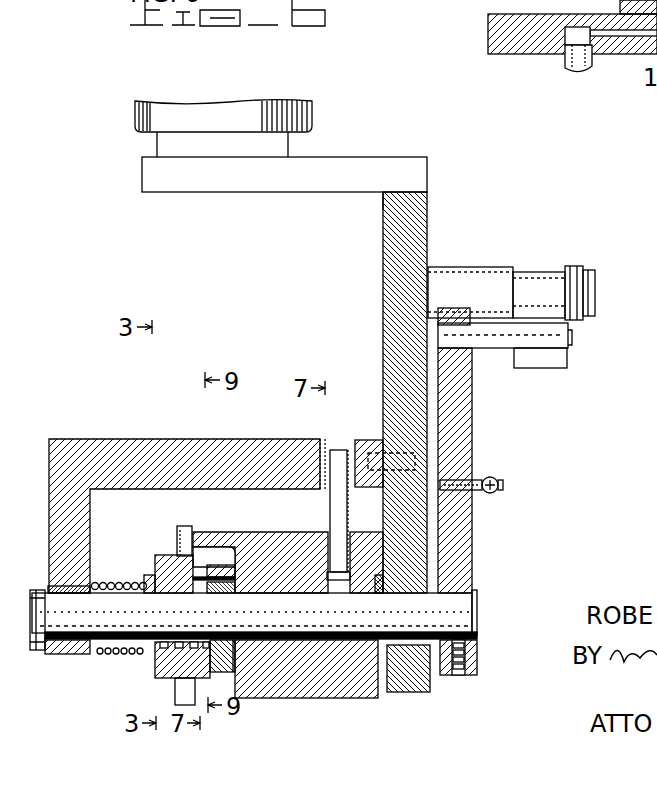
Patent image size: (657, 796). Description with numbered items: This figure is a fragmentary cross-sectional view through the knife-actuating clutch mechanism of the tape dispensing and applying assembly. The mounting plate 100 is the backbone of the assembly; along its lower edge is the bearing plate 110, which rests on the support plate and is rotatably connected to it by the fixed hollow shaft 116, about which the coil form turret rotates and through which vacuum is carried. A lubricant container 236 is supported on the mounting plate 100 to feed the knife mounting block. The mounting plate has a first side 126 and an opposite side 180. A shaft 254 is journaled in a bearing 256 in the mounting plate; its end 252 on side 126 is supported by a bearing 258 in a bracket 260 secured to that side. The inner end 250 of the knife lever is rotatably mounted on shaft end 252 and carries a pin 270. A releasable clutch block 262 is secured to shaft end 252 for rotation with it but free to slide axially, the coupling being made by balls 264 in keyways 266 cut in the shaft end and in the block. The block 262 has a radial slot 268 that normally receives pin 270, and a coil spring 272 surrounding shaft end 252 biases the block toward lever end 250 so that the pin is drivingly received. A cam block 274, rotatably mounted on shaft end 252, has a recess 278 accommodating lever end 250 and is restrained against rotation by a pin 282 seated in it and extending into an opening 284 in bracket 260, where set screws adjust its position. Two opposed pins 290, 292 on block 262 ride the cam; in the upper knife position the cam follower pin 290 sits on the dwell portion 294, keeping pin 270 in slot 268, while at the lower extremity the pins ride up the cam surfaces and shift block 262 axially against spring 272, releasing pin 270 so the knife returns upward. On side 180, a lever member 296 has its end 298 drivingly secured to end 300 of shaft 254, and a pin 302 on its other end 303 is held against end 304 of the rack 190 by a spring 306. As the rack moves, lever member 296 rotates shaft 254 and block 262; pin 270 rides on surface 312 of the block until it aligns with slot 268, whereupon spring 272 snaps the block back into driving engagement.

The mounting plate 100 is at (430, 198).
The bearing plate 110 is at (488, 32).
The fixed hollow shaft 116 is at (565, 58).
The side of mounting plate 126 is at (380, 212).
The opposite side of mounting plate 180 is at (430, 232).
The rack 190 is at (571, 352).
The lubricant container 236 is at (135, 110).
The inner end of lever member 250 is at (225, 553).
The end of shaft 252 is at (52, 650).
The shaft 254 is at (397, 622).
The bearing 256 is at (432, 680).
The bearing 258 is at (57, 588).
The bracket 260 is at (138, 445).
The releasable clutch block 262 is at (155, 566).
The balls 264 is at (172, 642).
The keyways 266 is at (211, 642).
The radial slot 268 is at (207, 548).
The pin 270 is at (216, 582).
The coil spring 272 is at (108, 655).
The cam block 274 is at (378, 698).
The recess 278 is at (222, 680).
The pin 282 is at (330, 498).
The opening 284 is at (340, 448).
The cam follower pin 290 is at (178, 530).
The pin 292 is at (175, 692).
The dwell portion 294 is at (177, 540).
The lever member 296 is at (475, 430).
The end of lever member 298 is at (478, 646).
The end of shaft 300 is at (478, 612).
The pin 302 is at (496, 350).
The other end of lever member 303 is at (441, 312).
The end of rack 304 is at (548, 368).
The spring 306 is at (497, 477).
The surface of block 312 is at (233, 657).